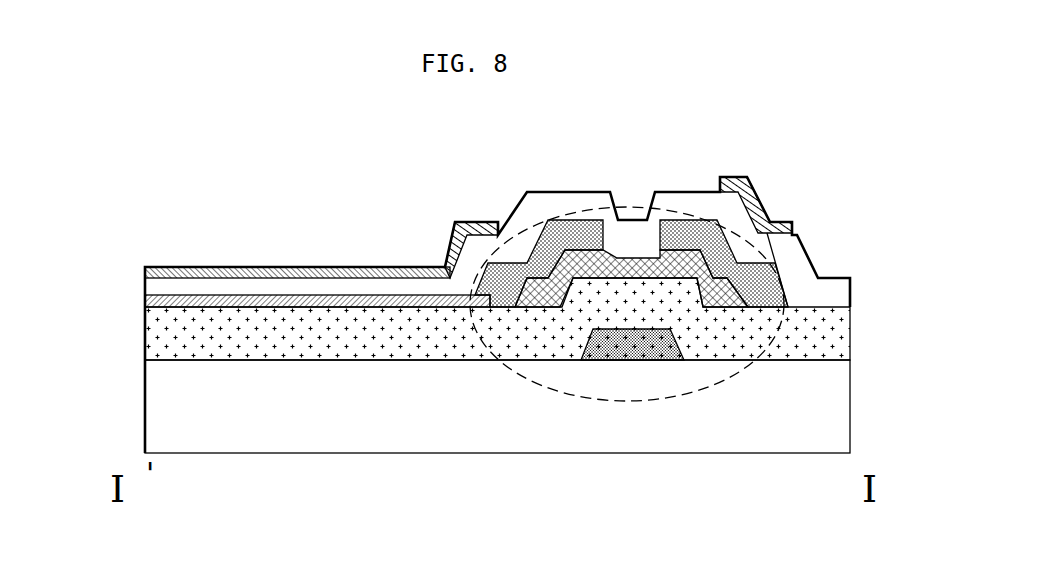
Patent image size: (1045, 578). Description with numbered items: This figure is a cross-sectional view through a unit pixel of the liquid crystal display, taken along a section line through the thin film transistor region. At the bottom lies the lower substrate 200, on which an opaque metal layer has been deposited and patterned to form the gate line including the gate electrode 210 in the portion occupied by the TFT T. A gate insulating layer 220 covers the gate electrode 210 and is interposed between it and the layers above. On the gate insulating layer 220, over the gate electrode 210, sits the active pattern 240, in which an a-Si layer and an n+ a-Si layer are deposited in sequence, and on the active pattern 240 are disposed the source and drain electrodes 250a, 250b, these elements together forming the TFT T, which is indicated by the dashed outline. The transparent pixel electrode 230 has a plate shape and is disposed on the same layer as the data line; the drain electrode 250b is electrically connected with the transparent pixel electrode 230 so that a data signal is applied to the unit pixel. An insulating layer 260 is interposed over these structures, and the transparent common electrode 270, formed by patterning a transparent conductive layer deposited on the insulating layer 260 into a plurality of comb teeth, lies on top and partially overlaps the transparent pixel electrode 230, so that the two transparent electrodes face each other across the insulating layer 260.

The lower substrate 200 is at (158, 408).
The gate electrode 210 is at (630, 355).
The gate insulating layer 220 is at (158, 340).
The transparent pixel electrode 230 is at (145, 305).
The active pattern 240 is at (790, 221).
The source electrode 250a is at (688, 227).
The drain electrode 250b is at (573, 227).
The insulating layer 260 is at (482, 242).
The transparent common electrode 270 is at (253, 267).
The TFT T is at (702, 394).